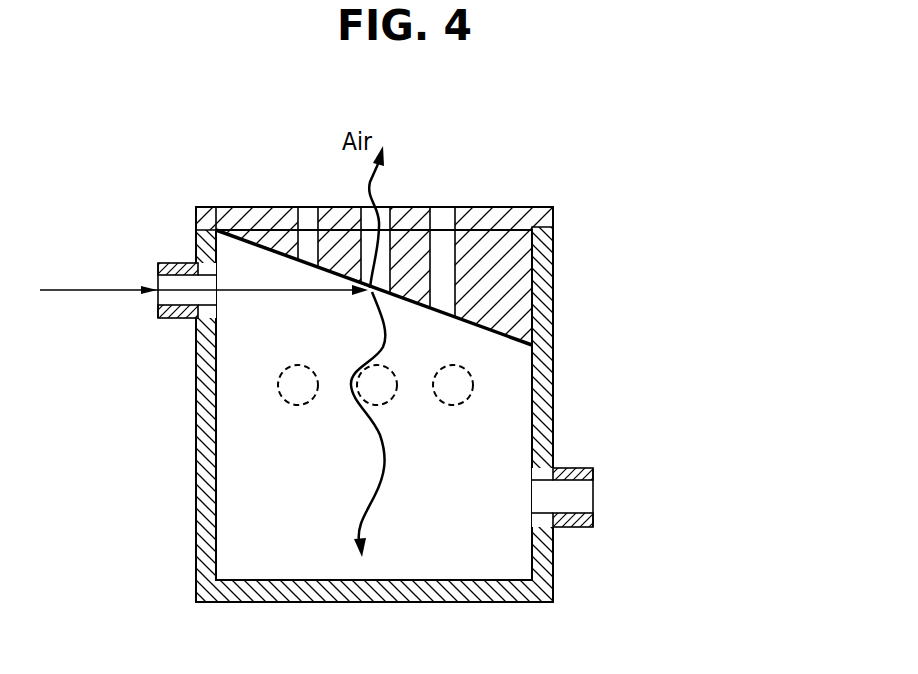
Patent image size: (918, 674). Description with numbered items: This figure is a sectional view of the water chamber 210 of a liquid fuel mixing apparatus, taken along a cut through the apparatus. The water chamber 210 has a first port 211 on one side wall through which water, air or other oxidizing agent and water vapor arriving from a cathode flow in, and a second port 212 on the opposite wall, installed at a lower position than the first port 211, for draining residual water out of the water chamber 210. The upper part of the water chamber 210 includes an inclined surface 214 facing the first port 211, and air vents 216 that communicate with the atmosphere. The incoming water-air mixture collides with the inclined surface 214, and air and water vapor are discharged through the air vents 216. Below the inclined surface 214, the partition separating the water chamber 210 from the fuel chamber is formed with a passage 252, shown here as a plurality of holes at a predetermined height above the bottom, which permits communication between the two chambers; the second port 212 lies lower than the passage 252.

The water chamber 210 is at (641, 273).
The first port 211 is at (176, 320).
The second port 212 is at (577, 468).
The inclined surface 214 is at (266, 257).
The air vents 216 is at (437, 226).
The passage 252 is at (280, 389).